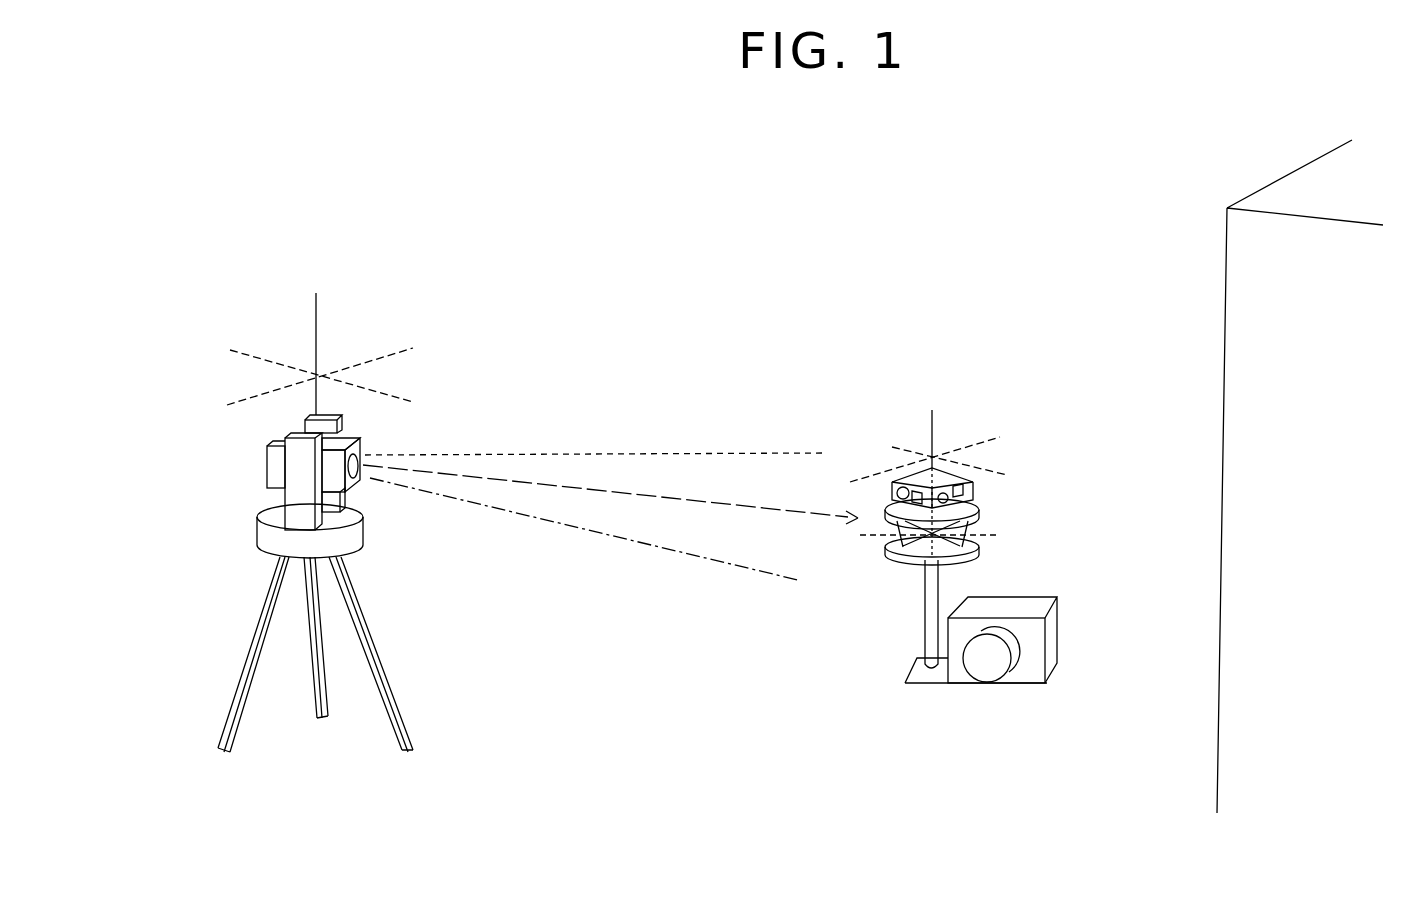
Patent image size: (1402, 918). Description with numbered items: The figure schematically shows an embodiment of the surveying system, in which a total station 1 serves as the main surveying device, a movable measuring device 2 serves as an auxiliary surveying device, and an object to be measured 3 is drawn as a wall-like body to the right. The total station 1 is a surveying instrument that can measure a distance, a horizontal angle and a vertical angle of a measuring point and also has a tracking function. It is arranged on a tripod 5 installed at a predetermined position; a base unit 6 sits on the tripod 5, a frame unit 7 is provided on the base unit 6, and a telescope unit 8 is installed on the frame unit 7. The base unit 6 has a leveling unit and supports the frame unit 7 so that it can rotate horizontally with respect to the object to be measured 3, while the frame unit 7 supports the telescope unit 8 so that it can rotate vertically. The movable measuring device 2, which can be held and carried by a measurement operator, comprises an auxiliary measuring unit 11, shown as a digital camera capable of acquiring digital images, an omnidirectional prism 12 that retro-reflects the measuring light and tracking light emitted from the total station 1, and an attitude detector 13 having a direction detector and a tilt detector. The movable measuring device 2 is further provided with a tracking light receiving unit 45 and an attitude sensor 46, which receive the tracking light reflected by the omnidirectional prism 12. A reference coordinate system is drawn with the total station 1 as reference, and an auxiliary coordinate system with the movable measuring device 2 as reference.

The total station 1 is at (242, 472).
The movable measuring device 2 is at (1050, 496).
The object to be measured 3 is at (1262, 187).
The tripod 5 is at (383, 658).
The base unit 6 is at (365, 533).
The frame unit 7 is at (305, 423).
The telescope unit 8 is at (353, 437).
The auxiliary measuring unit 11 is at (1057, 617).
The omnidirectional prism 12 is at (890, 520).
The attitude detector 13 is at (947, 470).
The tracking light receiving unit 45 is at (884, 501).
The attitude sensor 46 is at (886, 495).